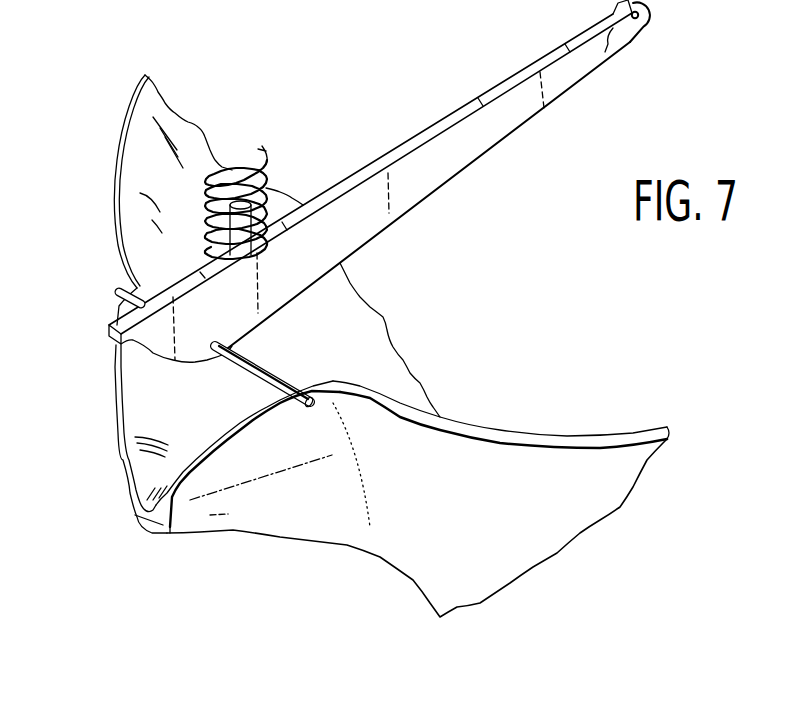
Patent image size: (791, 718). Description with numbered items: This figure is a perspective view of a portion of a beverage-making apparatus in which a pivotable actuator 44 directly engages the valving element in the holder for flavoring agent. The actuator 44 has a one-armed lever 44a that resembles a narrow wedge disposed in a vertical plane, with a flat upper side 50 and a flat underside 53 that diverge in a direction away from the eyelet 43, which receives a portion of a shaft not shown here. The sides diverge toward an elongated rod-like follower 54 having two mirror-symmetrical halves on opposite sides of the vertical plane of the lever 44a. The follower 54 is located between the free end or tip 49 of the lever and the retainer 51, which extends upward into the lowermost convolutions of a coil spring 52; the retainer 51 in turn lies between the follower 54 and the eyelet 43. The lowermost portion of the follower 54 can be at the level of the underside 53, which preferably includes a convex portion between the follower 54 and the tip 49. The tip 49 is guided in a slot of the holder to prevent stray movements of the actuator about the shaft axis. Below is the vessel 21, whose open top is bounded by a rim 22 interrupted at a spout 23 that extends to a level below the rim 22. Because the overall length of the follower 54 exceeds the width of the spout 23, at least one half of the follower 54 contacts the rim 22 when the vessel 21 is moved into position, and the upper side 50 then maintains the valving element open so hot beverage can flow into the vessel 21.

The vessel 21 is at (610, 550).
The rim 22 is at (627, 437).
The spout 23 is at (200, 517).
The eyelet 43 is at (641, 16).
The actuator 44 is at (370, 184).
The one-armed lever 44a is at (467, 133).
The free end or tip 49 is at (108, 334).
The upper side 50 is at (442, 118).
The retainer 51 is at (272, 195).
The coil spring 52 is at (263, 158).
The underside 53 is at (394, 223).
The rod-like follower 54 is at (265, 367).